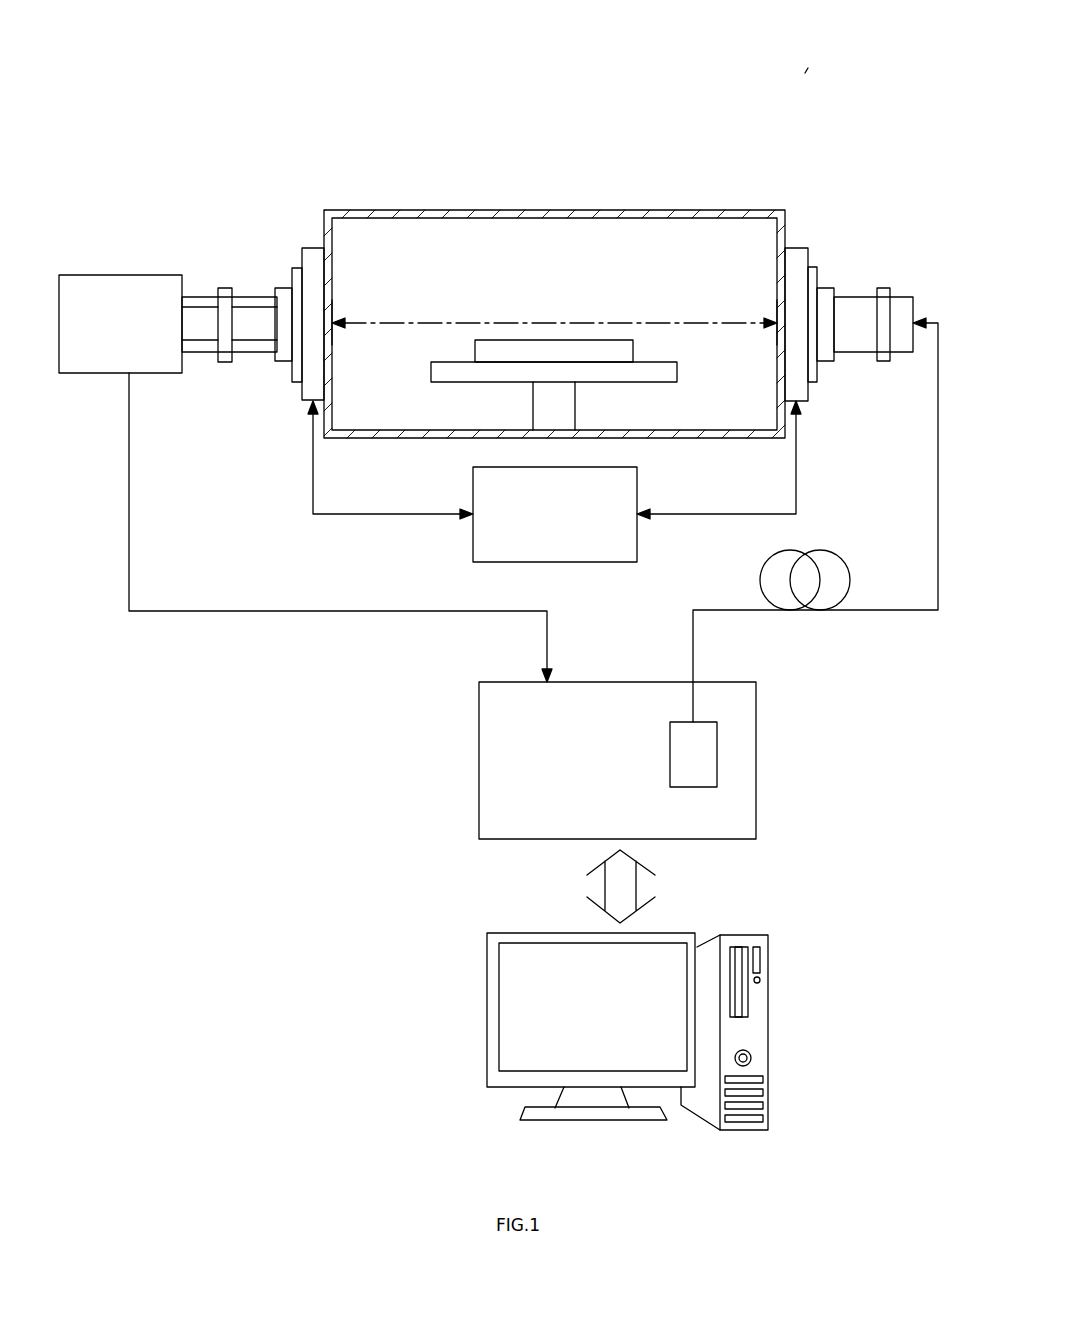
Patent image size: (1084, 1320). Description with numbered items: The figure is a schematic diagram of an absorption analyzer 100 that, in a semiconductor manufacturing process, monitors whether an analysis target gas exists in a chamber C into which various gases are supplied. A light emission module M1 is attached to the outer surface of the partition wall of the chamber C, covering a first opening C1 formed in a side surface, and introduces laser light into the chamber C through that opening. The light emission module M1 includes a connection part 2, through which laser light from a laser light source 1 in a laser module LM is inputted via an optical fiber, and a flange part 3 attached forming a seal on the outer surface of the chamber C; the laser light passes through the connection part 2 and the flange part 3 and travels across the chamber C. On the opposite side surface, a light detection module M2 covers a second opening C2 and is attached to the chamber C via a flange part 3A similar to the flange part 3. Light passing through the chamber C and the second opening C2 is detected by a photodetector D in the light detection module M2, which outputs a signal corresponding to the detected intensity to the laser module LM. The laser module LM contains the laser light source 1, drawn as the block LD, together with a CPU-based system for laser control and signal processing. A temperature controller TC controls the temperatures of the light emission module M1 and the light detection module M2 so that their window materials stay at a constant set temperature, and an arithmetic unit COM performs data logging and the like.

The absorption analyzer 100 is at (805, 73).
The chamber C is at (550, 210).
The first opening C1 is at (774, 318).
The second opening C2 is at (335, 317).
The light detection module M2 is at (98, 165).
The photodetector D is at (128, 275).
The flange part 3A is at (299, 249).
The light emission module M1 is at (788, 165).
The flange part 3 is at (805, 249).
The connection part 2 is at (857, 297).
The temperature controller TC is at (590, 562).
The laser module LM is at (479, 760).
The laser diode LD is at (693, 754).
The laser light source 1 is at (718, 755).
The arithmetic unit COM is at (770, 985).